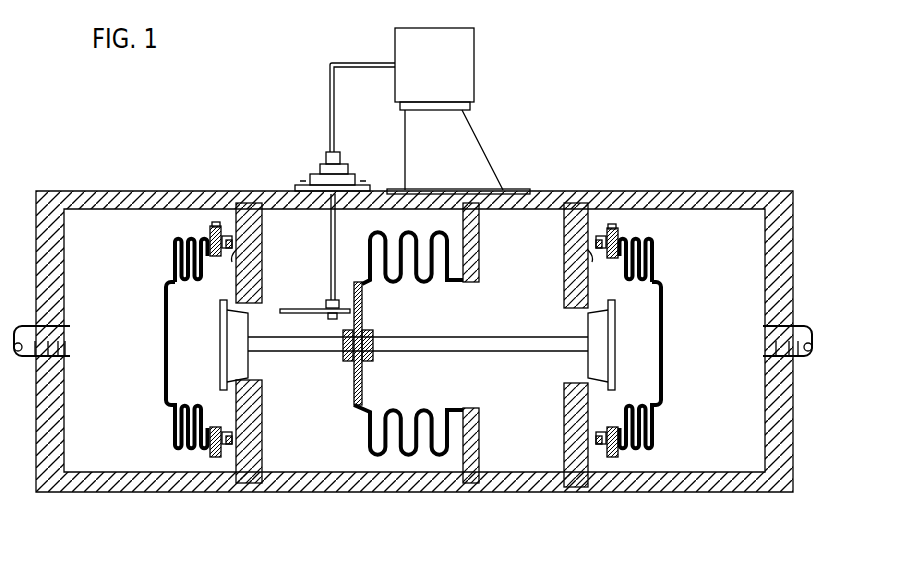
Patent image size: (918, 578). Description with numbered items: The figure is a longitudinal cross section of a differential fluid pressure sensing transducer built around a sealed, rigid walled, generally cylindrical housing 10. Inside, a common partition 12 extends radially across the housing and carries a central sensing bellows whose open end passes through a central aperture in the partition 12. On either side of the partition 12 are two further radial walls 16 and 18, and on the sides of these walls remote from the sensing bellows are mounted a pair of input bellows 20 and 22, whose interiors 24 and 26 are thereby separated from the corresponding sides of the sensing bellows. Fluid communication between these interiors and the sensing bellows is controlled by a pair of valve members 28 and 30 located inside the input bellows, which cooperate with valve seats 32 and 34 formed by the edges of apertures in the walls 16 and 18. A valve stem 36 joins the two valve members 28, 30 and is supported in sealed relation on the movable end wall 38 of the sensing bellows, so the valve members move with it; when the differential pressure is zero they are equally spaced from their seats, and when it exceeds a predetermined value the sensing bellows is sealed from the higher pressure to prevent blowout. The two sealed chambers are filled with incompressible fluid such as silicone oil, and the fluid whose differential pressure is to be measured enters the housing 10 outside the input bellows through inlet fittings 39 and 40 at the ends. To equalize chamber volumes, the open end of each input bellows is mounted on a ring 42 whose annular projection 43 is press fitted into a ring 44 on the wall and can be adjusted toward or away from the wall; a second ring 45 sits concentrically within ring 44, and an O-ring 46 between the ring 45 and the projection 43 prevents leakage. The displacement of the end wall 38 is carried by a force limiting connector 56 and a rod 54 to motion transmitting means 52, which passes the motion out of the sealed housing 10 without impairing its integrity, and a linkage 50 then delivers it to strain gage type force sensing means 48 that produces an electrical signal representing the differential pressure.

The housing 10 is at (570, 166).
The partition 12 is at (479, 237).
The wall 16 is at (563, 410).
The wall 18 is at (263, 447).
The input bellows 20 is at (654, 265).
The input bellows 22 is at (176, 258).
The interior of bellows 24 is at (623, 311).
The interior of bellows 26 is at (186, 336).
The valve member 28 is at (610, 360).
The valve member 30 is at (221, 360).
The valve seat 32 is at (591, 378).
The valve seat 34 is at (243, 374).
The valve stem 36 is at (403, 345).
The movable end wall 38 is at (353, 394).
The fluid inlet fitting 39 is at (764, 340).
The fluid inlet fitting 40 is at (72, 340).
The ring 42 is at (212, 232).
The annular projection 43 is at (233, 242).
The ring 44 is at (212, 224).
The second ring 45 is at (243, 260).
The O-ring 46 is at (231, 247).
The force sensing means 48 is at (422, 79).
The linkage 50 is at (326, 101).
The motion transmitting means 52 is at (338, 170).
The rod 54 is at (330, 292).
The force limiting connector 56 is at (291, 315).